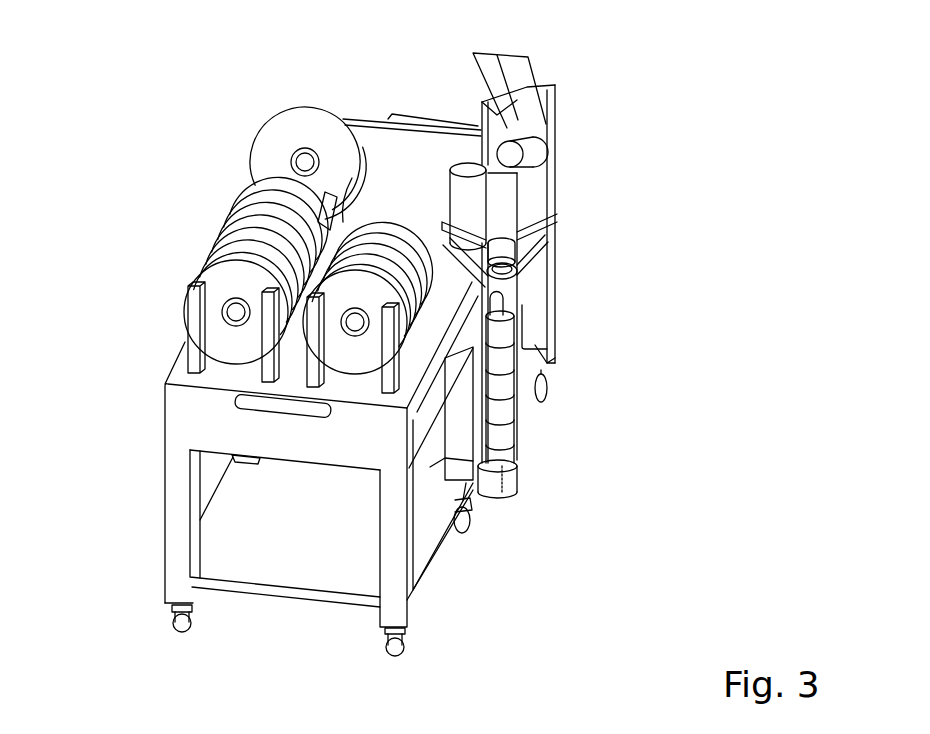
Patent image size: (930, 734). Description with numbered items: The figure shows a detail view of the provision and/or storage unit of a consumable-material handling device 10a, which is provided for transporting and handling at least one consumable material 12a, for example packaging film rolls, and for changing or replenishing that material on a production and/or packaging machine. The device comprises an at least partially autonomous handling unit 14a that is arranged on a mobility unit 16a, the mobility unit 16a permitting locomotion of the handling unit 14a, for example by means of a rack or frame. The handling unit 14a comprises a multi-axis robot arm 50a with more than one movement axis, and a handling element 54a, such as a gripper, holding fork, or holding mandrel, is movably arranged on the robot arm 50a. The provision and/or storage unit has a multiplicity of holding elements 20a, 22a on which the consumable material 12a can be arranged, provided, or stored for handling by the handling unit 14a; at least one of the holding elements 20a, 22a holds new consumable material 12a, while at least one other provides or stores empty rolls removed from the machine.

The consumable-material handling device 10a is at (590, 150).
The consumable material 12a is at (275, 147).
The handling unit 14a is at (452, 84).
The mobility unit 16a is at (152, 568).
The holding element 20a is at (189, 332).
The holding element 22a is at (518, 480).
The robot arm 50a is at (522, 66).
The handling element 54a is at (556, 216).